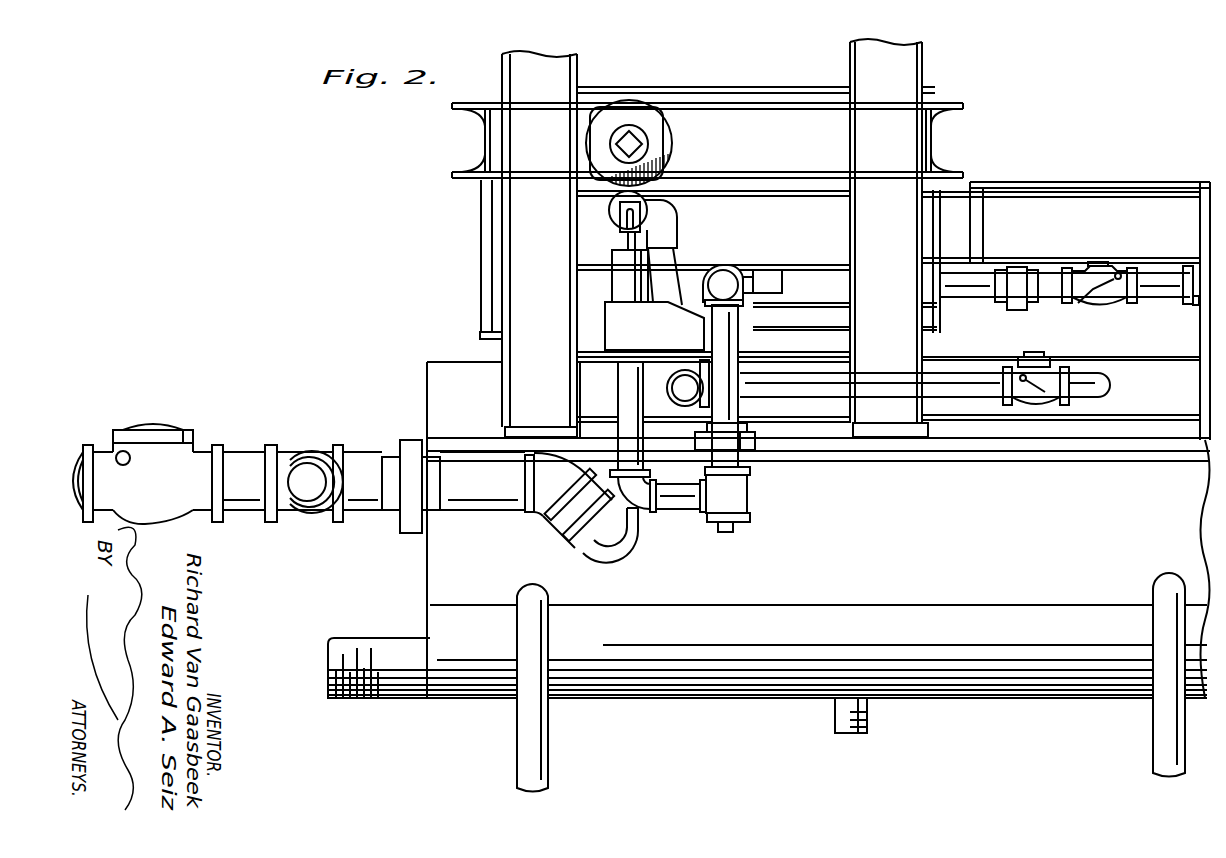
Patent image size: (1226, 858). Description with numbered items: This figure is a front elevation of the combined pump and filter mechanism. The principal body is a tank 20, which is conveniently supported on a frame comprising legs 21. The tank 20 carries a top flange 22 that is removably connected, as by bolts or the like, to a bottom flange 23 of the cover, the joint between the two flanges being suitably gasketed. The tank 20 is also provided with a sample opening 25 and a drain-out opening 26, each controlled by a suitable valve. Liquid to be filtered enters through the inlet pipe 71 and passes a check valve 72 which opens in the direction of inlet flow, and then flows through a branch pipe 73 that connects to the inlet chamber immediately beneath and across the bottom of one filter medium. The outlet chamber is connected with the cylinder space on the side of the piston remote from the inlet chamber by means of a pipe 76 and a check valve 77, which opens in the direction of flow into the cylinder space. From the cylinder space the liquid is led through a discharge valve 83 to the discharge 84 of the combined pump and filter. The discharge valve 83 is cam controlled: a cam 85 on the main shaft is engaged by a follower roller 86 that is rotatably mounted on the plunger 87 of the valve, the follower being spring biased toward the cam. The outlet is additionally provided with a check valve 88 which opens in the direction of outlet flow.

The tank 20 is at (820, 569).
The legs 21 is at (545, 752).
The top flange 22 is at (1089, 452).
The bottom flange 23 is at (1132, 438).
The sample opening 25 is at (836, 716).
The drain-out opening 26 is at (368, 642).
The pipe 71 is at (79, 450).
The check valve 72 is at (130, 465).
The branch pipe 73 is at (626, 550).
The pipe 76 is at (1167, 286).
The check valve 77 is at (1100, 284).
The discharge valve 83 is at (654, 326).
The discharge 84 is at (1100, 390).
The cam 85 is at (674, 170).
The follower roller 86 is at (618, 205).
The plunger 87 is at (626, 240).
The check valve 88 is at (1030, 396).